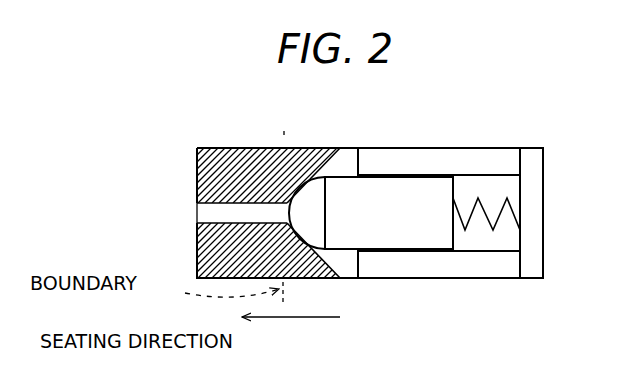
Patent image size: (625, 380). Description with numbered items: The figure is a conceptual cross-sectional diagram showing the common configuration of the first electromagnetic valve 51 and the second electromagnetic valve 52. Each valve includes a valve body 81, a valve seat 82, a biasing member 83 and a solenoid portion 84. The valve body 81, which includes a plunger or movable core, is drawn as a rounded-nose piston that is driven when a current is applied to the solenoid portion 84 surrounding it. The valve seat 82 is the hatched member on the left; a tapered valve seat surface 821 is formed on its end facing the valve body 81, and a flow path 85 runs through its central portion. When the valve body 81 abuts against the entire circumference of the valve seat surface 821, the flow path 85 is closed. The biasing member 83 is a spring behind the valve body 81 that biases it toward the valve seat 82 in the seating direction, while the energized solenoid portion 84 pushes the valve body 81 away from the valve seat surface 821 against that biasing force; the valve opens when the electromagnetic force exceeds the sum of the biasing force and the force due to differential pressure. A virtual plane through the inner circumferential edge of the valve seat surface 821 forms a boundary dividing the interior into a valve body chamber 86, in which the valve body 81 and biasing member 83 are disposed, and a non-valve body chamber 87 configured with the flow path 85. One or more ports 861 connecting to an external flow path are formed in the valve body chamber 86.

The first electromagnetic valve 51 is at (178, 107).
The second electromagnetic valve 52 is at (368, 193).
The valve body 81 is at (318, 190).
The valve seat 82 is at (273, 158).
The valve seat surface 821 is at (296, 195).
The biasing member 83 is at (513, 215).
The solenoid portion 84 is at (448, 158).
The flow path 85 is at (249, 208).
The valve body chamber 86 is at (343, 160).
The port 861 is at (348, 272).
The non-valve body chamber 87 is at (208, 213).